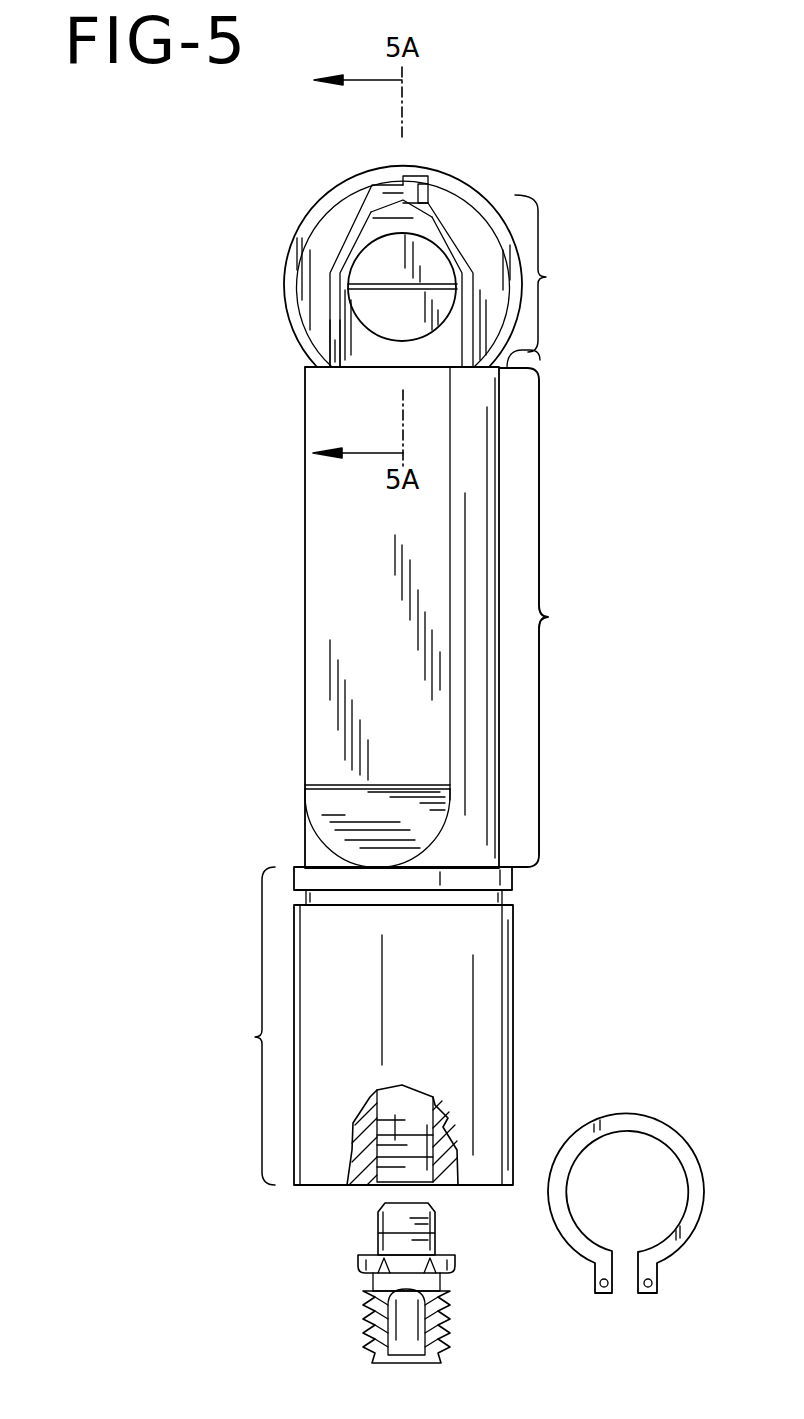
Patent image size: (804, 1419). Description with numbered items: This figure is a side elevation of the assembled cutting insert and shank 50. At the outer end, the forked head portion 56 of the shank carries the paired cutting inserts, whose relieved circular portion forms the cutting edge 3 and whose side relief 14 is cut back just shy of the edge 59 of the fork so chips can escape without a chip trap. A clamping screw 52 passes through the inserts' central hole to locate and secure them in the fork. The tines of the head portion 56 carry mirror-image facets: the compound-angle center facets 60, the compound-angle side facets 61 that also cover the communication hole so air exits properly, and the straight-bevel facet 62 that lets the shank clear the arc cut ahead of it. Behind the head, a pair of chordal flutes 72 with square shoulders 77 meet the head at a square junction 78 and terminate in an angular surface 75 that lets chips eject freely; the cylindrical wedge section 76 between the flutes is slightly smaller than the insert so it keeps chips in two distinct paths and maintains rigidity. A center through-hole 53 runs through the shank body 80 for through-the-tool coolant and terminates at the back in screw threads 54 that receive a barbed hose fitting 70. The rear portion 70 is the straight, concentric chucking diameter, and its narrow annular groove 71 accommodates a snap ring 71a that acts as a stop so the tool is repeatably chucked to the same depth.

The cutting edge 3 is at (300, 235).
The side relief 14 is at (327, 292).
The shank 50 is at (432, 970).
The clamping screw 52 is at (402, 271).
The center through-hole 53 is at (412, 1102).
The screw threads 54 is at (387, 1185).
The head portion 56 is at (552, 273).
The edge of fork 59 is at (330, 335).
The center facet 60 is at (395, 200).
The side facet 61 is at (436, 220).
The facet 62 is at (405, 219).
The rear portion 70 is at (516, 1310).
The annular groove 71 is at (503, 897).
The snap ring 71a is at (677, 1252).
The chordal flutes 72 is at (325, 622).
The angular surface 75 is at (328, 812).
The cylindrical wedge section 76 is at (500, 448).
The shoulders 77 is at (514, 368).
The junction 78 is at (347, 368).
The shank body 80 is at (564, 617).